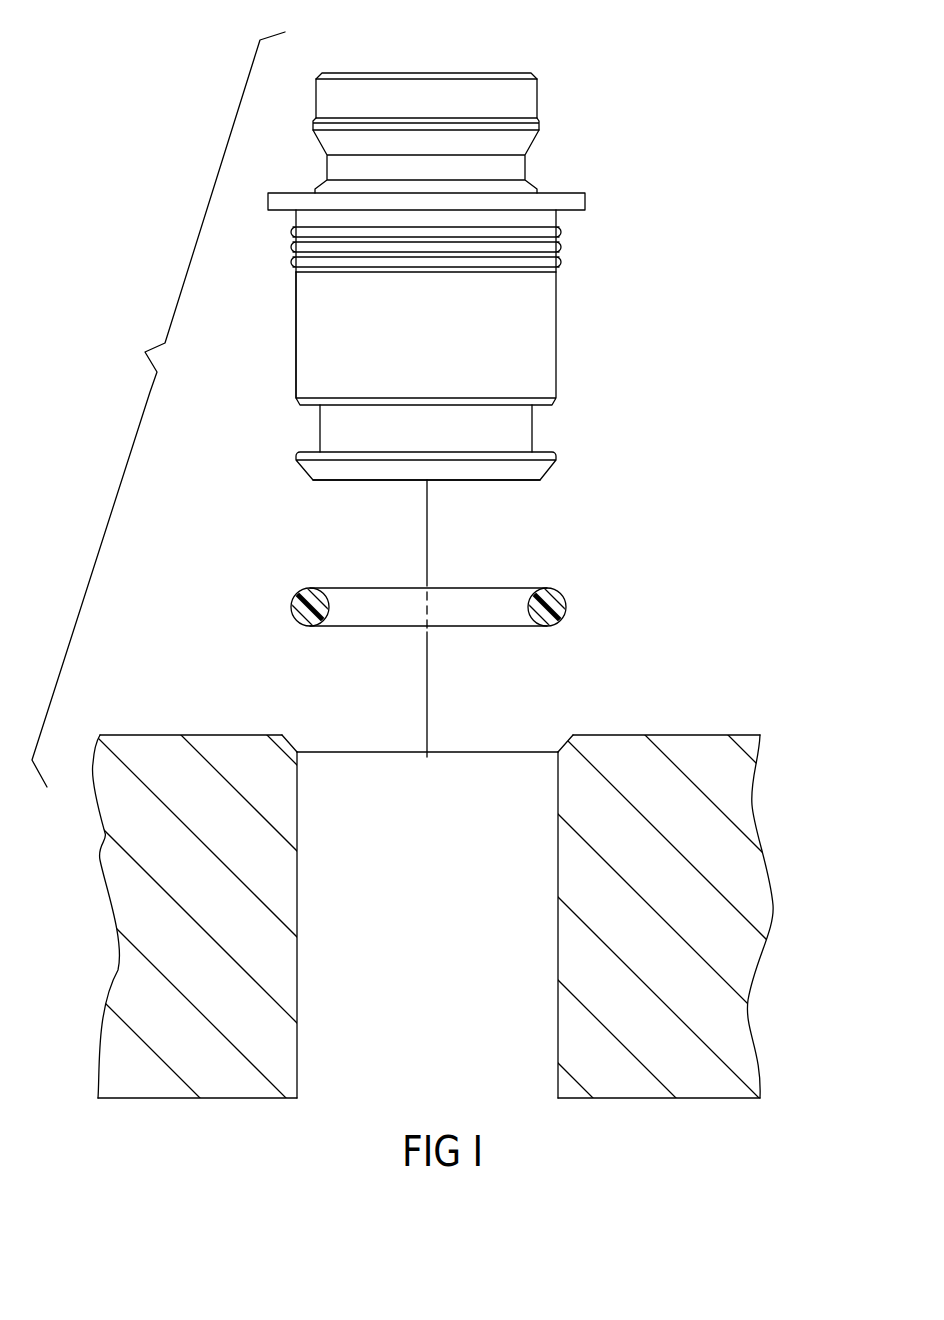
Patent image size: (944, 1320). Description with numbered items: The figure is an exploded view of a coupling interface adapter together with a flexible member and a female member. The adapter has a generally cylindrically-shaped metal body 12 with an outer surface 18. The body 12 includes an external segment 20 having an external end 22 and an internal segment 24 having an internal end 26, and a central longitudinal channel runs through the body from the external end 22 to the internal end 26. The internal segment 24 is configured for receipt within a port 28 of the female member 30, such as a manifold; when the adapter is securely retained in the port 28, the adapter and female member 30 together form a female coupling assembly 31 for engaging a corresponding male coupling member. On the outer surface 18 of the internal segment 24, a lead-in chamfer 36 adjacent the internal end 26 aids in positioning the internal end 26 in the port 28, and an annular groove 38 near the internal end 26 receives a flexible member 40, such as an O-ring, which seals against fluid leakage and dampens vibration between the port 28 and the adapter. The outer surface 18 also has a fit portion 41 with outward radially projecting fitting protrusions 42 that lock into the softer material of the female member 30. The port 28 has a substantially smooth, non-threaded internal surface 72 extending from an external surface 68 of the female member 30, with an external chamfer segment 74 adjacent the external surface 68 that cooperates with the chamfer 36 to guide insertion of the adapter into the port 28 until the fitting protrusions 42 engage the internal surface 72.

The body 12 is at (439, 269).
The outer surface 18 is at (436, 307).
The external segment 20 is at (462, 74).
The external end 22 is at (488, 73).
The internal segment 24 is at (310, 348).
The internal end 26 is at (332, 481).
The port 28 is at (450, 929).
The female member 30 is at (472, 904).
The female coupling assembly 31 is at (158, 409).
The lead-in chamfer 36 is at (542, 474).
The annular groove 38 is at (532, 428).
The flexible member 40 is at (566, 594).
The fit portion 41 is at (436, 248).
The fitting protrusion 42 is at (295, 258).
The external surface 68 is at (218, 735).
The internal surface 72 is at (558, 838).
The external chamfer segment 74 is at (566, 744).